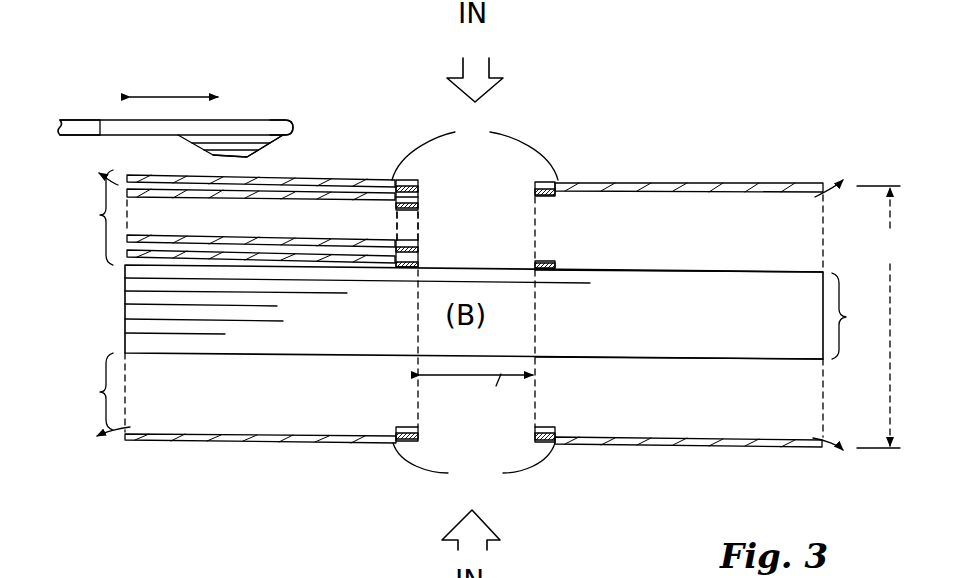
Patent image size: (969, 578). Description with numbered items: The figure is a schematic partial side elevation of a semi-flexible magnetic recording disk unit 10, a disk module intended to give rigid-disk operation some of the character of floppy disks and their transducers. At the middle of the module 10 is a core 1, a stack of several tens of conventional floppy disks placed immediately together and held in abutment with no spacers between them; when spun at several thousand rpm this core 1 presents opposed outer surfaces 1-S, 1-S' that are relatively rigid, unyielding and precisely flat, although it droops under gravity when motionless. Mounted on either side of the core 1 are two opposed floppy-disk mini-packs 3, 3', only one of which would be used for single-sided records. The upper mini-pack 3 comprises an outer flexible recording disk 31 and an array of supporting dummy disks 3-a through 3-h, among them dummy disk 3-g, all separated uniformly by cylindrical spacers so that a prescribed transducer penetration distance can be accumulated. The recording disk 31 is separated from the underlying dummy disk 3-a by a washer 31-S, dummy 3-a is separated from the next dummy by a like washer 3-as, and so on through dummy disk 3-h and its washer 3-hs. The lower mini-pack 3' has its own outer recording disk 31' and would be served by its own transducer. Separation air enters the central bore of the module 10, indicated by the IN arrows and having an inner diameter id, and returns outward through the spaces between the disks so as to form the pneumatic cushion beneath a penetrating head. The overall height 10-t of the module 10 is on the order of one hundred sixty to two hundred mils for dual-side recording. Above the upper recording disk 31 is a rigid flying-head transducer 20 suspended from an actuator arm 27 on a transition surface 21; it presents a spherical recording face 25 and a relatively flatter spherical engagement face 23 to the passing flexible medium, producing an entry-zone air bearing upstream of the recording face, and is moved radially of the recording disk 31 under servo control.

The core 1 is at (500, 312).
The outer surface of core 1-S is at (679, 253).
The outer surface of core 1-S' is at (679, 377).
The mini-pack 3 is at (220, 217).
The mini-pack 3' is at (220, 398).
The dummy disk 3-a is at (419, 198).
The washer 3-as is at (396, 204).
The dummy disk 3-g is at (417, 240).
The dummy disk 3-h is at (418, 255).
The washer 3-hs is at (555, 265).
The semi-flexible magnetic recording disk unit 10 is at (769, 178).
The overall height of module 10-t is at (886, 317).
The transducer 20 is at (253, 106).
The transition surface 21 is at (286, 139).
The engagement face 23 is at (200, 148).
The recording face 25 is at (248, 158).
The actuator arm 27 is at (87, 120).
The recording disk 31 is at (475, 143).
The recording disk 31' is at (474, 473).
The washer 31-S is at (418, 190).
The inner diameter dimension id is at (476, 394).